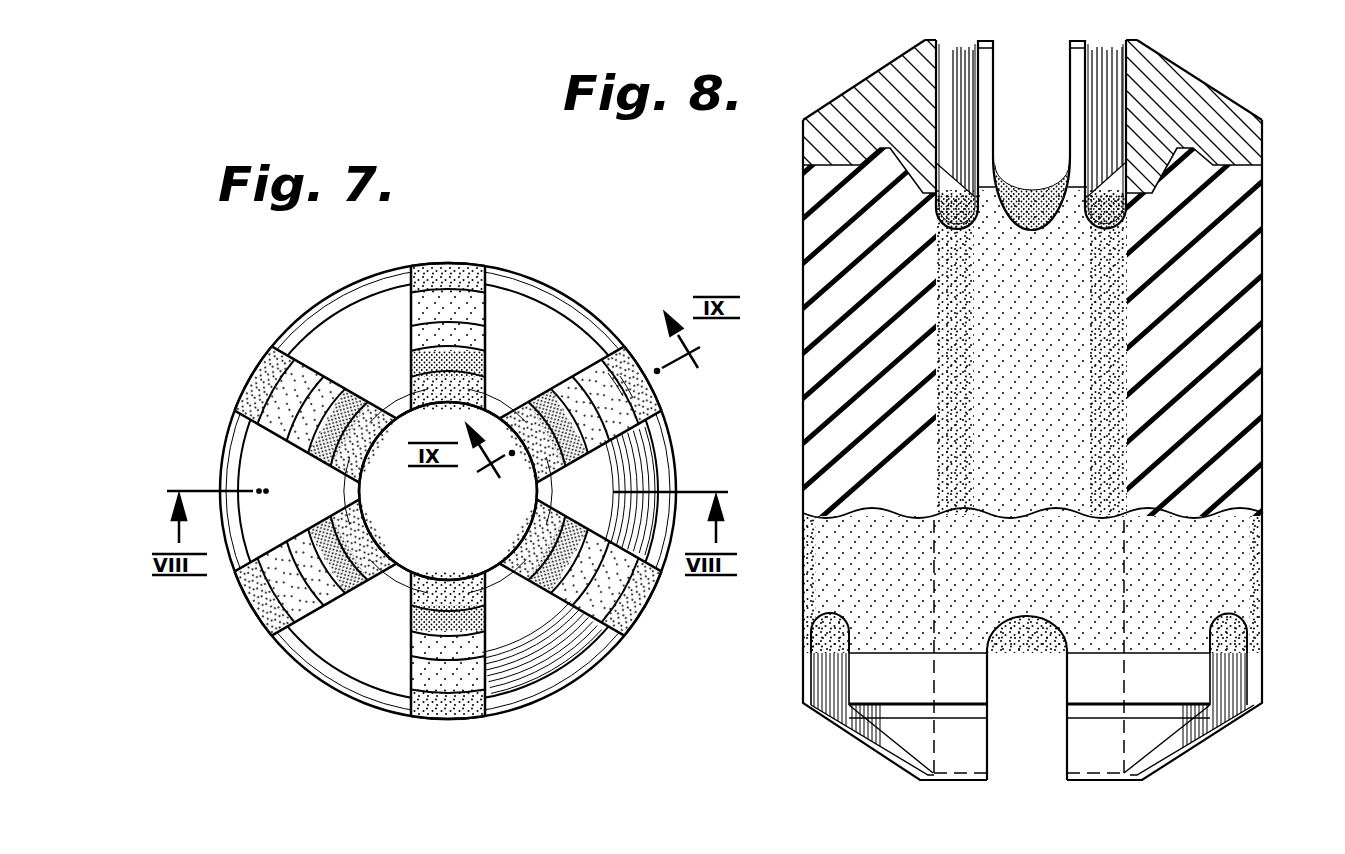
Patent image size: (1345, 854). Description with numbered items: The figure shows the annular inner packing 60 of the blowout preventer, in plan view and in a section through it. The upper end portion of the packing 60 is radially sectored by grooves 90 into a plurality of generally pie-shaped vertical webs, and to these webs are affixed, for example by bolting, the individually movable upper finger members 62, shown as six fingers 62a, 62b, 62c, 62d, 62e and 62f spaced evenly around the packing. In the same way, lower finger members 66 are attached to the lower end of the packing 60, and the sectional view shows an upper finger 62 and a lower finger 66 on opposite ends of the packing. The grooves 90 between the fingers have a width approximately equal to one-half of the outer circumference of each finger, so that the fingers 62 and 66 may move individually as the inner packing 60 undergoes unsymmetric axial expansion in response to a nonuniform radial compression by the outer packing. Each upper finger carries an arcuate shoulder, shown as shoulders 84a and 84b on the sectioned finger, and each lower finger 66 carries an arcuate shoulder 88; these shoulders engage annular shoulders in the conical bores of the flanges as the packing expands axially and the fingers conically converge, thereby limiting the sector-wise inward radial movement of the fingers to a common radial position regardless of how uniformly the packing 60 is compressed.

In FIG. 7, the inner packing 60 is at (447, 263).
In FIG. 8, the inner packing 60 is at (1212, 250).
In FIG. 7, the upper finger members 62 is at (368, 528).
In FIG. 8, the upper finger members 62 is at (1122, 402).
In FIG. 7, the upper finger member 62a is at (523, 327).
In FIG. 8, the upper finger member 62a is at (905, 82).
In FIG. 7, the upper finger member 62b is at (612, 472).
In FIG. 8, the upper finger member 62b is at (1165, 80).
In FIG. 7, the upper finger member 62c is at (533, 627).
In FIG. 7, the upper finger member 62d is at (358, 640).
In FIG. 7, the upper finger member 62e is at (258, 458).
In FIG. 7, the upper finger member 62f is at (358, 342).
In FIG. 8, the lower finger members 66 is at (988, 750).
In FIG. 8, the arcuate shoulder 84a is at (829, 107).
In FIG. 8, the arcuate shoulder 84b is at (1243, 110).
In FIG. 8, the arcuate shoulder 88 is at (1066, 707).
In FIG. 8, the grooves 90 is at (838, 624).